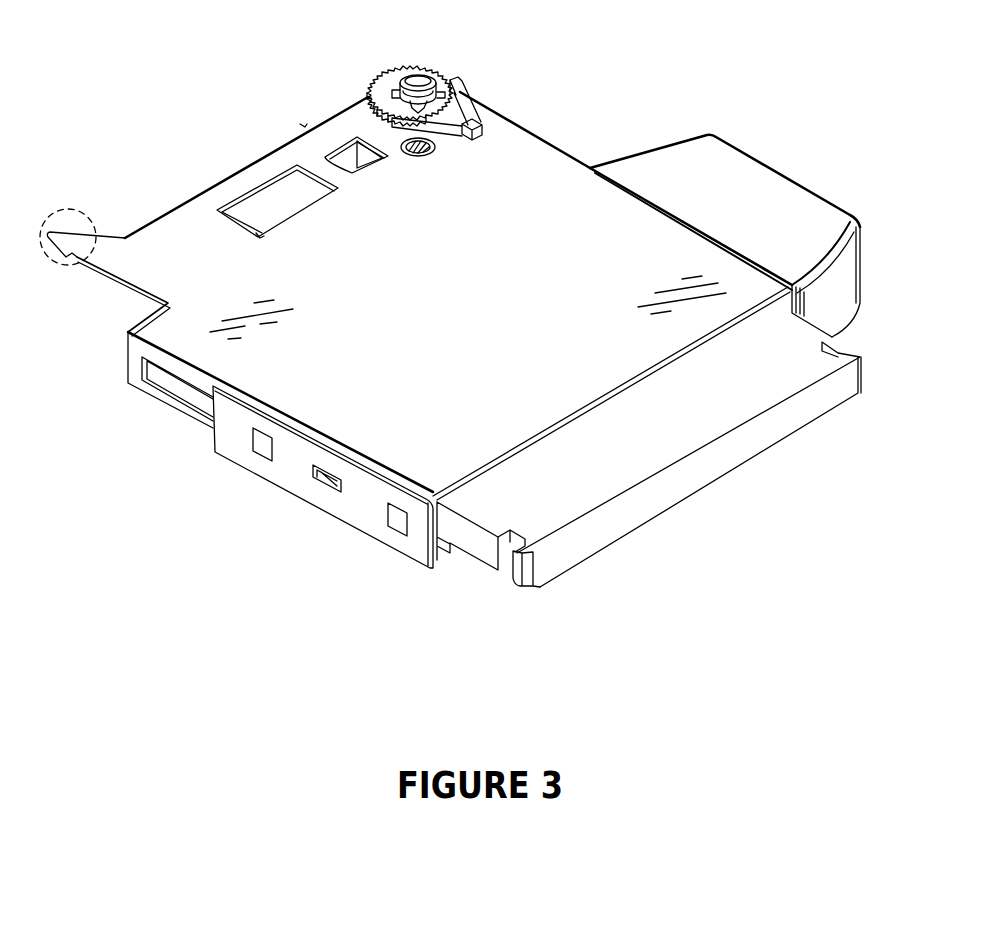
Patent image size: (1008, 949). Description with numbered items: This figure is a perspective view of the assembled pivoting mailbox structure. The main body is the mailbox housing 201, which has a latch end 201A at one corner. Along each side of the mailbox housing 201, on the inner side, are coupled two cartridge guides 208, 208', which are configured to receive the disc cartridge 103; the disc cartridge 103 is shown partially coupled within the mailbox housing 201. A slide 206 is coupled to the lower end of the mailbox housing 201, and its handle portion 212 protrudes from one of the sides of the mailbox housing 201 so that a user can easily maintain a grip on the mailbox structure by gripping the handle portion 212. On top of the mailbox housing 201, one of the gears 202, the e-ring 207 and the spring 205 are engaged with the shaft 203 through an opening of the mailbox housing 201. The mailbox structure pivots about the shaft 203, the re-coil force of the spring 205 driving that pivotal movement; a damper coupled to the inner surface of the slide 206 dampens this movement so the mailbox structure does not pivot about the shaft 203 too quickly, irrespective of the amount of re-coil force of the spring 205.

The mailbox housing 201 is at (553, 168).
The latch end 201A is at (93, 232).
The gear 202 is at (392, 82).
The shaft 203 is at (418, 80).
The spring 205 is at (300, 124).
The slide 206 is at (370, 528).
The e-ring 207 is at (440, 92).
The cartridge guide 208 is at (488, 561).
The cartridge guide 208' is at (854, 292).
The handle portion 212 is at (785, 186).
The disc cartridge 103 is at (845, 350).